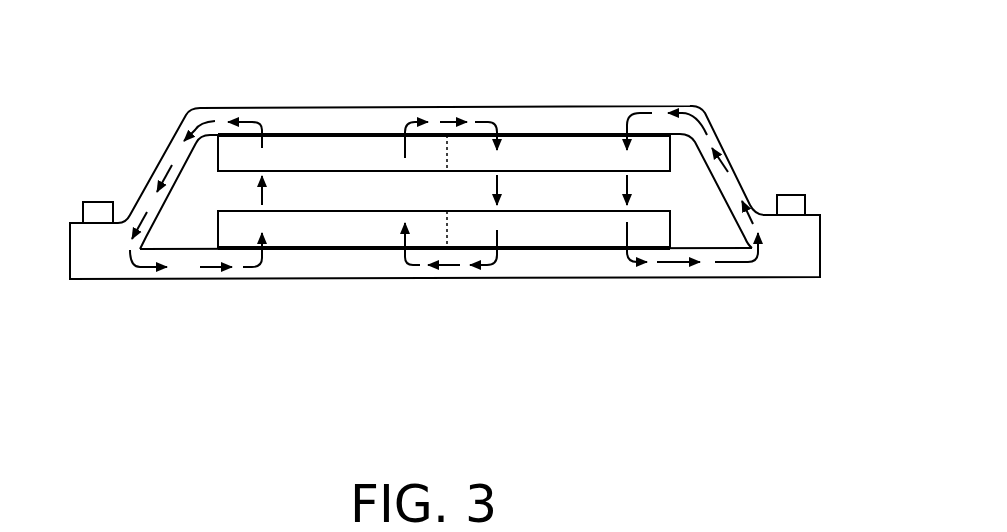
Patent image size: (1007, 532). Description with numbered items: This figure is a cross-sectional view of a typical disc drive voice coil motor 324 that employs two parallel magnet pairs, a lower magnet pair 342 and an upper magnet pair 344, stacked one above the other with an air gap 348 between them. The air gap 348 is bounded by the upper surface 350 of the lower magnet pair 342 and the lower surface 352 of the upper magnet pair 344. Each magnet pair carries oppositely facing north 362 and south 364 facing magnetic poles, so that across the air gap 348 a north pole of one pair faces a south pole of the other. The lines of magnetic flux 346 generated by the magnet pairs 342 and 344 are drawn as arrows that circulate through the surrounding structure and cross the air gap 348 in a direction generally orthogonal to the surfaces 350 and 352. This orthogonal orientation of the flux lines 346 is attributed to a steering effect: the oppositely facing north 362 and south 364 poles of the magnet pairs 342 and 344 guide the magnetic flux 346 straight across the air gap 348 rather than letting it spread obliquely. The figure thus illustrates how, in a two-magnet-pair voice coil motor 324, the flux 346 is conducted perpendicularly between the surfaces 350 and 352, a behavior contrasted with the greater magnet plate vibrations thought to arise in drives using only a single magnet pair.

The voice coil motor 324 is at (807, 305).
The lower magnet pair 342 is at (397, 135).
The upper magnet pair 344 is at (283, 250).
The lines of magnetic flux 346 is at (167, 173).
The air gap 348 is at (653, 188).
The upper surface of the lower magnet pair 350 is at (578, 210).
The lower surface of the upper magnet pair 352 is at (280, 177).
The north facing magnetic pole 362 is at (323, 165).
The south facing magnetic pole 364 is at (543, 166).